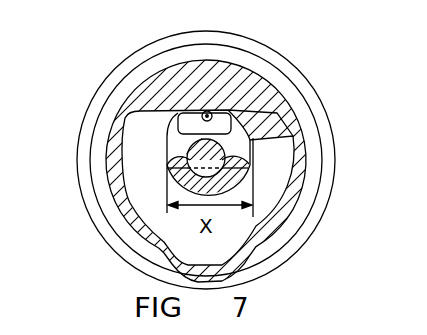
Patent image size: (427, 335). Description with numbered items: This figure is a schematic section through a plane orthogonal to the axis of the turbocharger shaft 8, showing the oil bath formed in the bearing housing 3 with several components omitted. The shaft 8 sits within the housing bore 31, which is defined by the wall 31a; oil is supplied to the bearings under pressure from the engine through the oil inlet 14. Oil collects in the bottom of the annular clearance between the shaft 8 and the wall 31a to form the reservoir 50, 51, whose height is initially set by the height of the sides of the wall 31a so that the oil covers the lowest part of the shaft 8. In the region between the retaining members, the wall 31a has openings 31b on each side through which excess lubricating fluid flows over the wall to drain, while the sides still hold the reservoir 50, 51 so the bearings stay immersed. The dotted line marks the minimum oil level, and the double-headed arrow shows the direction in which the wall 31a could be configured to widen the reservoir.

The bearing housing 3 is at (190, 72).
The turbocharger shaft 8 is at (218, 152).
The oil inlet 14 is at (197, 115).
The housing bore 31 is at (262, 157).
The wall 31a is at (296, 209).
The openings 31b is at (380, 74).
The reservoir 50 is at (140, 184).
The reservoir 51 is at (166, 190).